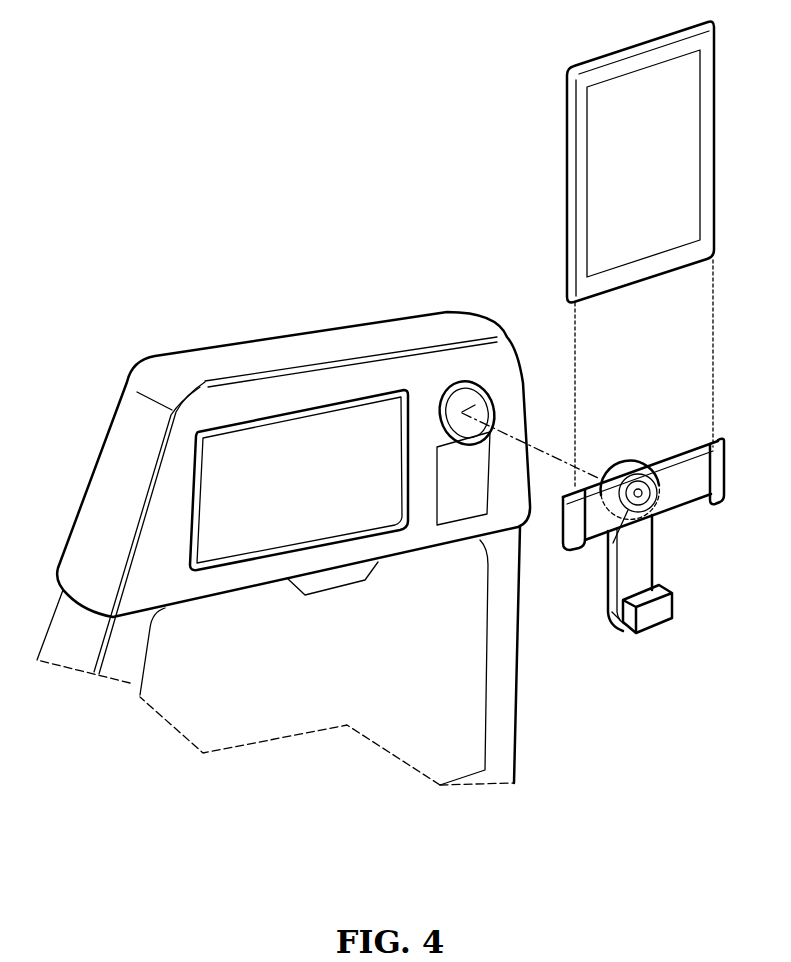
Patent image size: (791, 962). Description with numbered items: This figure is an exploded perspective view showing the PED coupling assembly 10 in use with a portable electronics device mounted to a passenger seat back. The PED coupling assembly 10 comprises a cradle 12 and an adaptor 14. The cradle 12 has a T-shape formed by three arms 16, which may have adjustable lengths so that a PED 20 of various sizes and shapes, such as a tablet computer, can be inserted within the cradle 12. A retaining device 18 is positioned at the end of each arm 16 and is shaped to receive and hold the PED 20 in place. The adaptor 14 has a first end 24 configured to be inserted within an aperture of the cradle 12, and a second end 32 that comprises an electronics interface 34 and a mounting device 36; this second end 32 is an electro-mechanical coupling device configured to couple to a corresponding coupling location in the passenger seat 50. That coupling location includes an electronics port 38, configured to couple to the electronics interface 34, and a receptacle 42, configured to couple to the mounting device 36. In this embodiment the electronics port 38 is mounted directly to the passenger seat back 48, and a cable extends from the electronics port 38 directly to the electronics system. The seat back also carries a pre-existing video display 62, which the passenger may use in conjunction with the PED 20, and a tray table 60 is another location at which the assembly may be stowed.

The PED coupling assembly 10 is at (738, 495).
The cradle 12 is at (605, 618).
The adaptor 14 is at (632, 457).
The arm 16 is at (683, 497).
The retaining device 18 is at (723, 463).
The PED 20 is at (568, 72).
The first end 24 is at (606, 597).
The second end 32 is at (618, 470).
The electronics interface 34 is at (603, 467).
The mounting device 36 is at (633, 468).
The electronics port 38 is at (477, 392).
The receptacle 42 is at (453, 387).
The passenger seat back 48 is at (220, 457).
The passenger seat 50 is at (90, 540).
The tray table 60 is at (427, 687).
The video display 62 is at (215, 382).